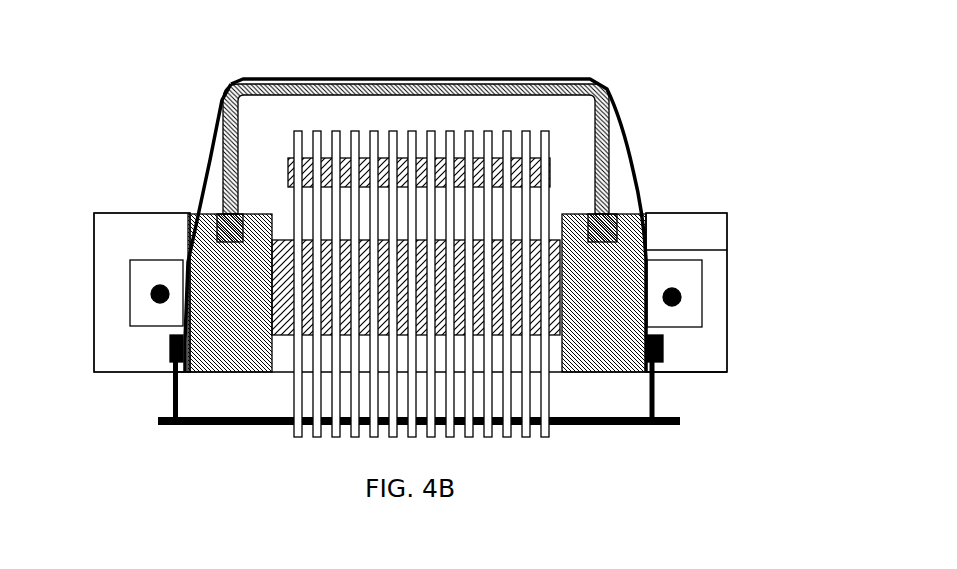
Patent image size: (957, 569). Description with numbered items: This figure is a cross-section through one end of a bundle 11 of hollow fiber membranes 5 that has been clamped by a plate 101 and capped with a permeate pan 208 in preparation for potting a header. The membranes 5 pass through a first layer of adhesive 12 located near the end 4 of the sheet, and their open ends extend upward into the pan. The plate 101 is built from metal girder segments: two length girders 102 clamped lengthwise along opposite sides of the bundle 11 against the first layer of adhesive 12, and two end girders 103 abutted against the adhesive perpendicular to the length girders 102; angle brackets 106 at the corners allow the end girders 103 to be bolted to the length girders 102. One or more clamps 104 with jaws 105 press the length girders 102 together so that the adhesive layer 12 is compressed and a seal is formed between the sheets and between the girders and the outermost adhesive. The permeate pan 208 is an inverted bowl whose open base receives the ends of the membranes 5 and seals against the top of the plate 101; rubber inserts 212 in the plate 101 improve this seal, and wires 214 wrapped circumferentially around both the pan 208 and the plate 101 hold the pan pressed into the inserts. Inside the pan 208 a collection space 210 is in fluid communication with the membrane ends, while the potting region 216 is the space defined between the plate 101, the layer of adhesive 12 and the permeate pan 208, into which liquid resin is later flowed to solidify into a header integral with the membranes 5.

The end of the sheet 4 is at (355, 131).
The membranes 5 is at (355, 437).
The bundle 11 is at (475, 122).
The first layer of adhesive 12 is at (542, 322).
The plate 101 is at (740, 308).
The length girders 102 is at (183, 290).
The end girders 103 is at (98, 335).
The clamps 104 is at (158, 427).
The jaws 105 is at (168, 352).
The angle brackets 106 is at (150, 280).
The permeate pan 208 is at (227, 133).
The collection space 210 is at (552, 113).
The rubber inserts 212 is at (215, 214).
The wires 214 is at (632, 148).
The potting region 216 is at (262, 192).